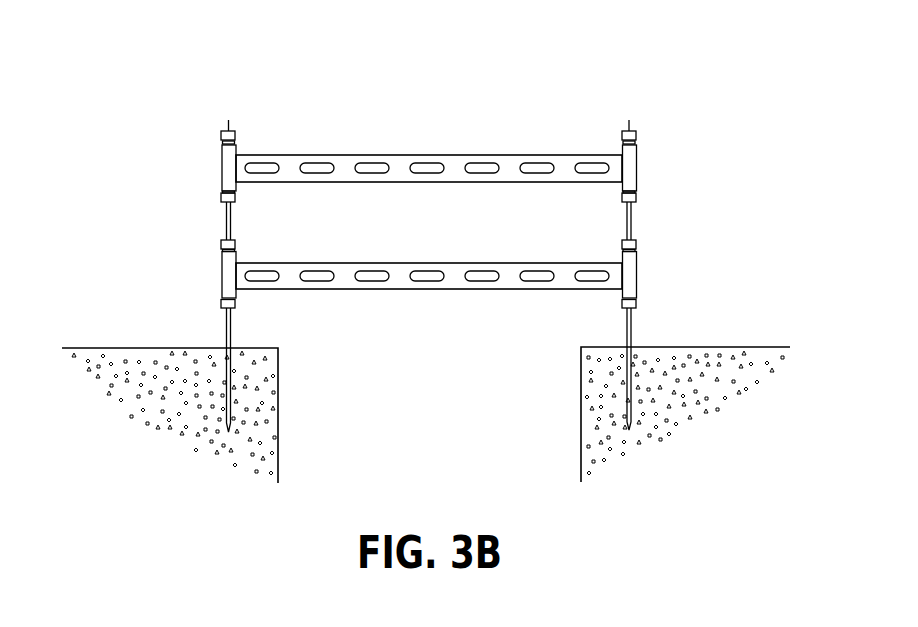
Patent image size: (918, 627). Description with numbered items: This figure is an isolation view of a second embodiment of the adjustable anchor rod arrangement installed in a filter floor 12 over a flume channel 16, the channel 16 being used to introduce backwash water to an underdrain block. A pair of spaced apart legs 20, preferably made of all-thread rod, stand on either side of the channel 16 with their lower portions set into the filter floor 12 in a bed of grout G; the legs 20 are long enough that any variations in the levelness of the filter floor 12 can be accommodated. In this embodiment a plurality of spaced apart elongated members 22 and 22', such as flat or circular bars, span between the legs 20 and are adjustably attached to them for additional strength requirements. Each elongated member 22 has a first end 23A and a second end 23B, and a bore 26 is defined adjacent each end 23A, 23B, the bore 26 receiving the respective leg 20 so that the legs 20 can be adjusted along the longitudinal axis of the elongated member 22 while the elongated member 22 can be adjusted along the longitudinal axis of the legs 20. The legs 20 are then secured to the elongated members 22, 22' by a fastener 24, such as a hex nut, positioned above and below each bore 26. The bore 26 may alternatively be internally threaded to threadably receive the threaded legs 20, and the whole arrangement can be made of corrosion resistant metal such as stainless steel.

The filter floor 12 is at (250, 348).
The channel 16 is at (438, 425).
The legs 20 is at (226, 323).
The elongated member 22 is at (429, 107).
The elongated member 22' is at (429, 246).
The first end 23A is at (237, 147).
The second end 23B is at (699, 165).
The fastener 24 is at (636, 137).
The bore 26 is at (637, 163).
The grout G is at (201, 416).